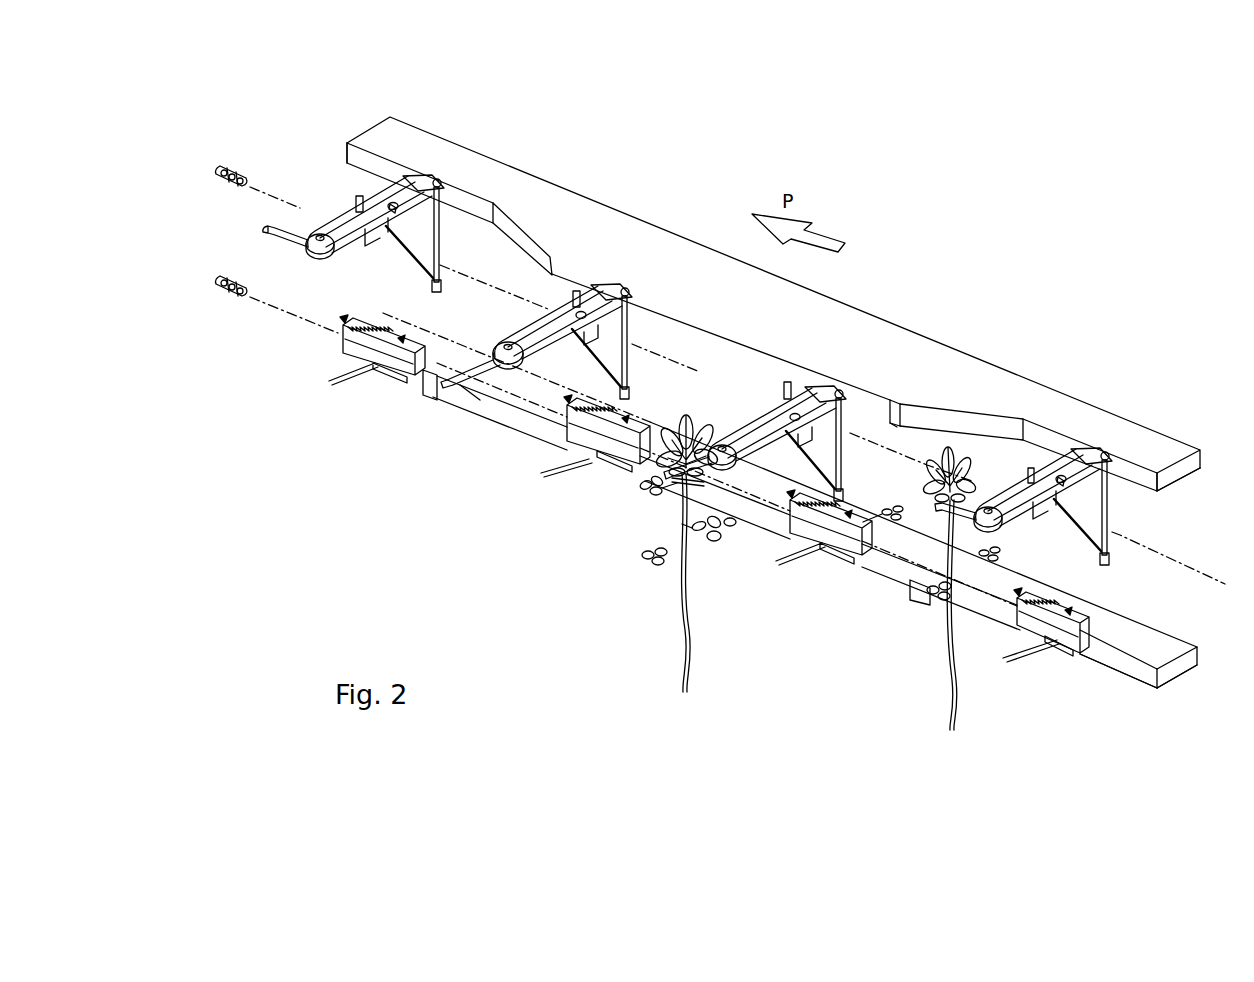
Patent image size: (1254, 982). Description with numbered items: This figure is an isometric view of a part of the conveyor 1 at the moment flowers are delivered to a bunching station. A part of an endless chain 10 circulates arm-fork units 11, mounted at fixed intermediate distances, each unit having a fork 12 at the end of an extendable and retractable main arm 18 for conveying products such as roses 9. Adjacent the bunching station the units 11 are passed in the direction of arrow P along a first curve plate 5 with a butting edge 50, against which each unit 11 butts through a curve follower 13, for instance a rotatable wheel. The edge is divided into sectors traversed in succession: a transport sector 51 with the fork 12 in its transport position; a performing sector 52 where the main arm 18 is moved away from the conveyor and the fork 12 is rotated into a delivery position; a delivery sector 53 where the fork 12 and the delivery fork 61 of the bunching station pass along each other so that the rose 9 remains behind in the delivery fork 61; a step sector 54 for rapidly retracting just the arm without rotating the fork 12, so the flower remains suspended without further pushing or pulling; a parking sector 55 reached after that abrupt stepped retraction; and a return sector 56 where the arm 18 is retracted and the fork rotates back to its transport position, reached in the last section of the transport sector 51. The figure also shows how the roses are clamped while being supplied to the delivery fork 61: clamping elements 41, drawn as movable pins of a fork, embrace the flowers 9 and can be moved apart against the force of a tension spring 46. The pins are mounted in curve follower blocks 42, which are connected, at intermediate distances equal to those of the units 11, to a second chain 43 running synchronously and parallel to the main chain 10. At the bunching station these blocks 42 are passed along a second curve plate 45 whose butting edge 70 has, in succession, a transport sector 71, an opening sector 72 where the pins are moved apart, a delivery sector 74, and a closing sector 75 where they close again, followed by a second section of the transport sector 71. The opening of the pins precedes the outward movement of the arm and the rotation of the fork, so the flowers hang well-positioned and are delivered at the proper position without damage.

The conveyor 1 is at (269, 184).
The first curve plate 5 is at (1068, 412).
The rose 9 is at (684, 627).
The endless chain 10 is at (216, 167).
The arm-fork unit 11 is at (375, 186).
The fork 12 is at (268, 229).
The curve follower 13 is at (466, 184).
The main arm 18 is at (751, 398).
The clamping elements 41 is at (772, 561).
The curve follower block 42 is at (390, 377).
The second chain 43 is at (214, 285).
The second curve plate 45 is at (1176, 671).
The tension spring 46 is at (1056, 630).
The butting edge 50 is at (1168, 483).
The transport sector 51 is at (365, 153).
The performing sector 52 is at (954, 419).
The delivery sector 53 is at (893, 417).
The step sector 54 is at (898, 404).
The parking sector 55 is at (567, 272).
The return sector 56 is at (519, 237).
The delivery fork 61 is at (650, 527).
The butting edge 70 is at (1148, 685).
The transport sector 71 is at (1126, 668).
The opening sector 72 is at (907, 580).
The delivery sector 74 is at (762, 524).
The closing sector 75 is at (427, 388).